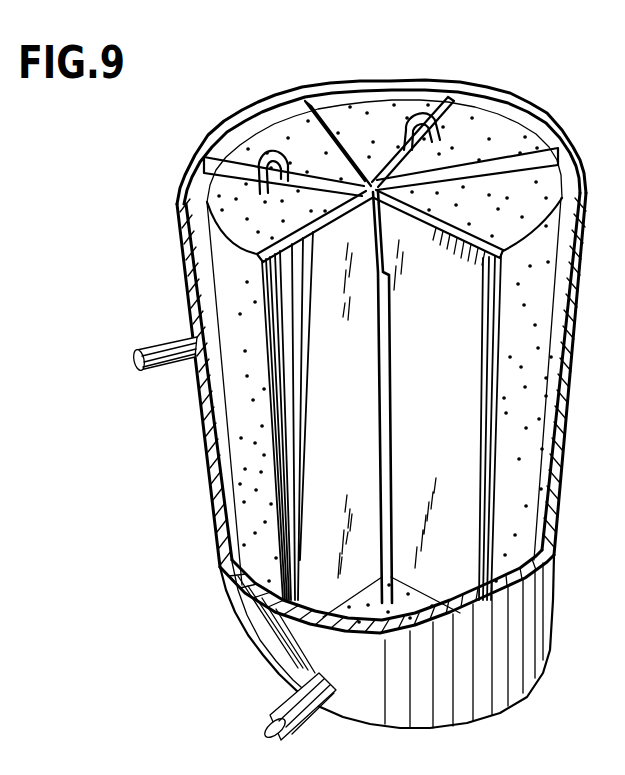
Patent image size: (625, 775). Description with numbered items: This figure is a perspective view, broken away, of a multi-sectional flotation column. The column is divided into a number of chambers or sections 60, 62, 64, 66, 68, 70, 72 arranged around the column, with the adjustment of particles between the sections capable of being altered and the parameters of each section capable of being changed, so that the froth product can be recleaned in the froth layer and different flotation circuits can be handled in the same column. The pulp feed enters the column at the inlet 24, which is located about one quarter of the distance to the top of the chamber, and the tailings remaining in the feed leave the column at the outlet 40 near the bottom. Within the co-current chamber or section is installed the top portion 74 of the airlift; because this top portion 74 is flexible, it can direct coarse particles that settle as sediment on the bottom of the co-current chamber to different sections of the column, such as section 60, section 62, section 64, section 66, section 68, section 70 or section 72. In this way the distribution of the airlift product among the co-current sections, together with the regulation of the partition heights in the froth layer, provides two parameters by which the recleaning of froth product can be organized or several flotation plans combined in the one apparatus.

The inlet 24 is at (163, 348).
The outlet 40 is at (314, 673).
The section 60 is at (210, 213).
The section 62 is at (288, 137).
The section 64 is at (377, 117).
The section 66 is at (497, 137).
The perforated basket section 68 is at (528, 208).
The section 70 is at (442, 400).
The section 72 is at (353, 400).
The top portion of the airlift 74 is at (258, 150).